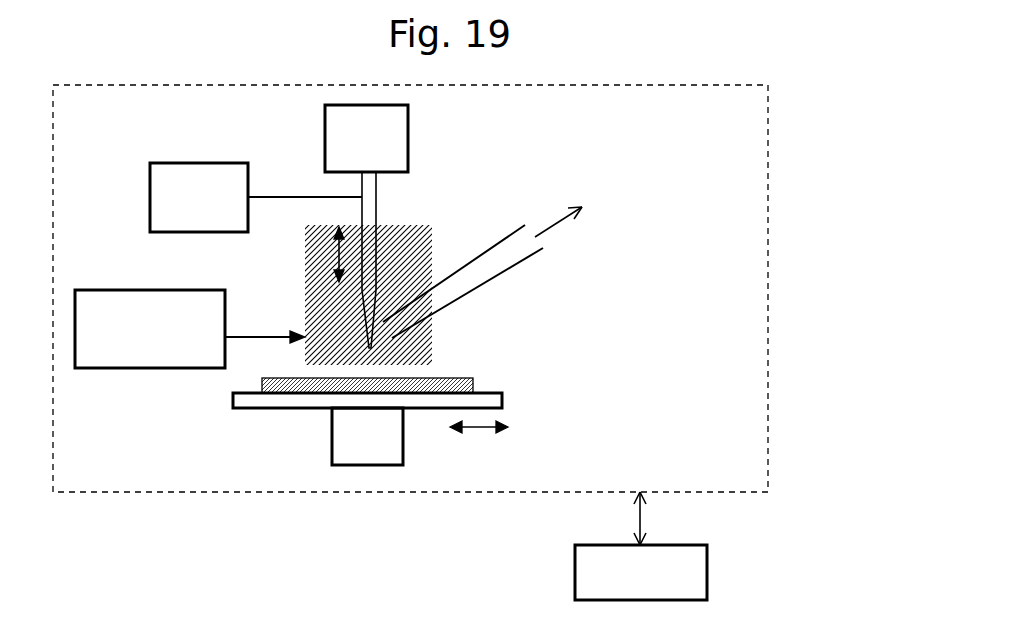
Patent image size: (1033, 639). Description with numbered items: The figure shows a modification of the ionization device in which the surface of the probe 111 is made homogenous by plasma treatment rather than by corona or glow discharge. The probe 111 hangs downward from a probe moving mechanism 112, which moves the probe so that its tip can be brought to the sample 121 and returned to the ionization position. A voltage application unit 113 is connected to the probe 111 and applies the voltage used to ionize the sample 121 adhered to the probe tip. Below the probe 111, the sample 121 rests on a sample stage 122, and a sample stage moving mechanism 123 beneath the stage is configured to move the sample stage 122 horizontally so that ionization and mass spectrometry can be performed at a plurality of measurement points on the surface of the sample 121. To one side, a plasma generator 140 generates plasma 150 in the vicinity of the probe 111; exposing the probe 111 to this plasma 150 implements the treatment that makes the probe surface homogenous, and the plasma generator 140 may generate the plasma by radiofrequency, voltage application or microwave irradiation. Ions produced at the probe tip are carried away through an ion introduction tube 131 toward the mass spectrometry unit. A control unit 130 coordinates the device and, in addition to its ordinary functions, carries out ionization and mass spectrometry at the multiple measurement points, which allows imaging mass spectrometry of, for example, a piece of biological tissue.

The probe 111 is at (377, 198).
The probe moving mechanism 112 is at (408, 138).
The voltage application unit 113 is at (205, 161).
The sample 121 is at (473, 385).
The sample stage 122 is at (502, 398).
The sample stage moving mechanism 123 is at (405, 435).
The control unit 130 is at (707, 573).
The ion introduction tube 131 is at (502, 277).
The plasma generator 140 is at (110, 368).
The plasma 150 is at (305, 293).